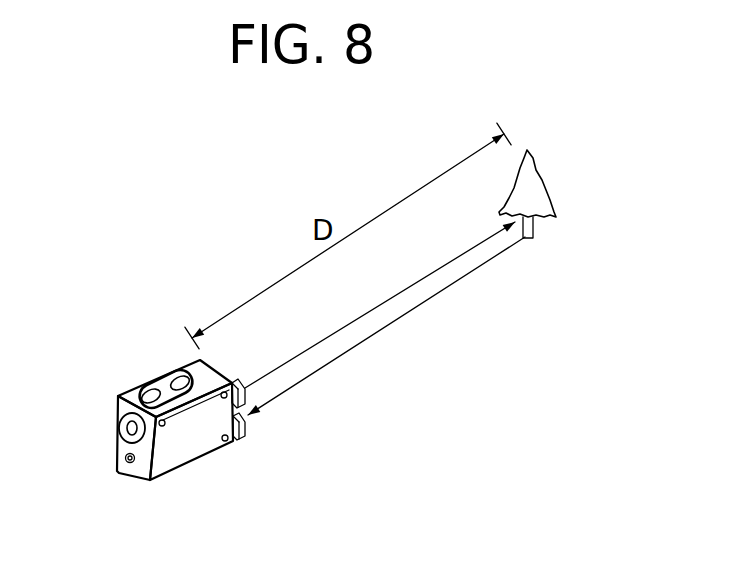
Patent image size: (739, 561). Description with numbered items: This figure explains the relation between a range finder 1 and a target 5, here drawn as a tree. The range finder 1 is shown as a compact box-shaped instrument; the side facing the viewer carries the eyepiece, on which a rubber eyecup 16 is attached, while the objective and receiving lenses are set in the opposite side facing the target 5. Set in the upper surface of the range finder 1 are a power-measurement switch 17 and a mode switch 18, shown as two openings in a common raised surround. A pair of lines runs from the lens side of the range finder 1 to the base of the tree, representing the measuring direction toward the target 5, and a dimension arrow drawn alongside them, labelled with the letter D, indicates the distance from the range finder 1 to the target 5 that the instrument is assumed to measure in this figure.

The range finder 1 is at (159, 412).
The target 5 is at (536, 190).
The rubber eyecup 16 is at (124, 428).
The power-measurement switch 17 is at (174, 378).
The mode switch 18 is at (144, 392).